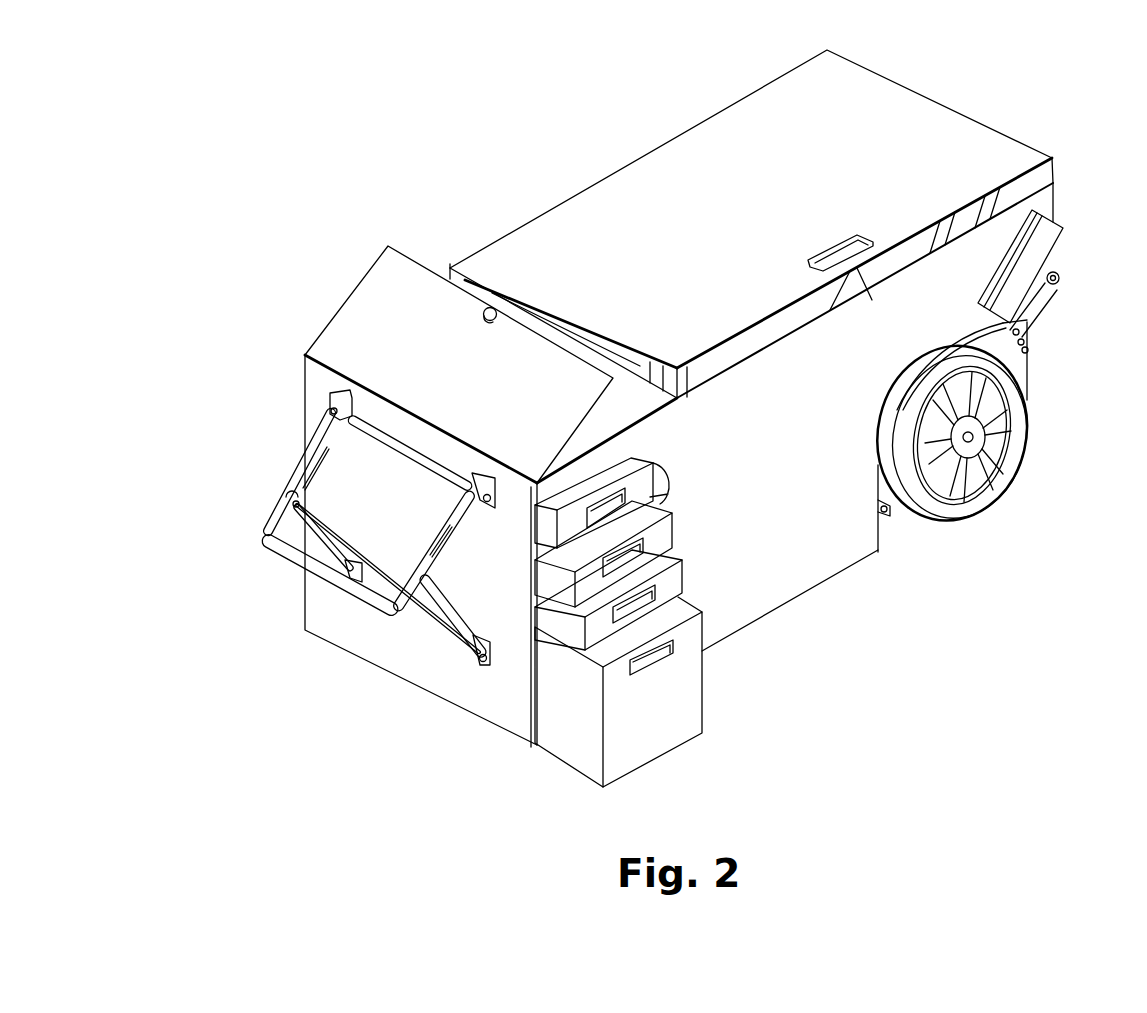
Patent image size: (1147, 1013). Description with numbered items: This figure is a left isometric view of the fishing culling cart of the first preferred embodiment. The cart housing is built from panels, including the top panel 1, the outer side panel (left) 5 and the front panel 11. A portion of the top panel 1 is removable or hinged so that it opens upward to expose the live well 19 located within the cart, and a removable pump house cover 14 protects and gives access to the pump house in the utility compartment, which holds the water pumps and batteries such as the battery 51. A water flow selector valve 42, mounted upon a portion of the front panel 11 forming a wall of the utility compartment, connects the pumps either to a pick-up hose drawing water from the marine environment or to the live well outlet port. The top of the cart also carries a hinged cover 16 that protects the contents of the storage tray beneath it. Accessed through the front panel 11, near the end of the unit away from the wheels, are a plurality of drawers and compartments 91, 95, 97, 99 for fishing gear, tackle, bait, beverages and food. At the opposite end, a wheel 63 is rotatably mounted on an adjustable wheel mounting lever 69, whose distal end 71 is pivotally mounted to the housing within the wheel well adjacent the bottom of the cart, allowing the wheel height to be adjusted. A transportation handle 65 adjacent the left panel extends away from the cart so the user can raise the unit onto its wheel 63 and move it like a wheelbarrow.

The top panel 1 is at (751, 206).
The outer side panel (left) 5 is at (400, 647).
The front panel 11 is at (780, 558).
The pump house cover 14 is at (450, 268).
The hinged cover 16 is at (388, 282).
The live well 19 is at (738, 352).
The water flow selector valve 42 is at (668, 500).
The battery 51 is at (1020, 330).
The wheel 63 is at (1013, 450).
The transportation handle 65 is at (337, 575).
The adjustable wheel mounting lever 69 is at (1047, 293).
The distal end of wheel mounting lever 71 is at (887, 510).
The drawer 91 is at (663, 735).
The drawer 95 is at (598, 628).
The drawer 97 is at (590, 580).
The drawer 99 is at (573, 528).